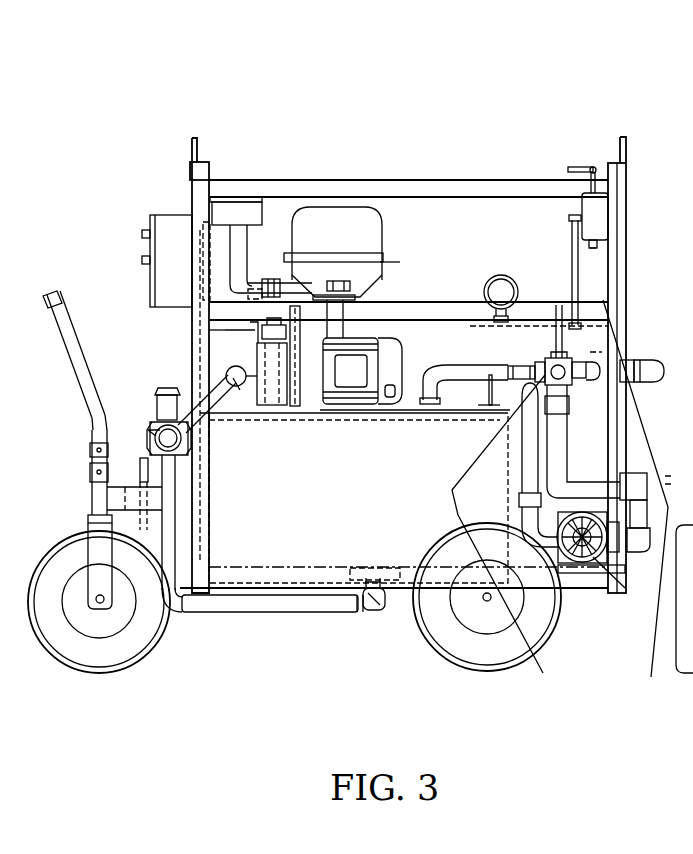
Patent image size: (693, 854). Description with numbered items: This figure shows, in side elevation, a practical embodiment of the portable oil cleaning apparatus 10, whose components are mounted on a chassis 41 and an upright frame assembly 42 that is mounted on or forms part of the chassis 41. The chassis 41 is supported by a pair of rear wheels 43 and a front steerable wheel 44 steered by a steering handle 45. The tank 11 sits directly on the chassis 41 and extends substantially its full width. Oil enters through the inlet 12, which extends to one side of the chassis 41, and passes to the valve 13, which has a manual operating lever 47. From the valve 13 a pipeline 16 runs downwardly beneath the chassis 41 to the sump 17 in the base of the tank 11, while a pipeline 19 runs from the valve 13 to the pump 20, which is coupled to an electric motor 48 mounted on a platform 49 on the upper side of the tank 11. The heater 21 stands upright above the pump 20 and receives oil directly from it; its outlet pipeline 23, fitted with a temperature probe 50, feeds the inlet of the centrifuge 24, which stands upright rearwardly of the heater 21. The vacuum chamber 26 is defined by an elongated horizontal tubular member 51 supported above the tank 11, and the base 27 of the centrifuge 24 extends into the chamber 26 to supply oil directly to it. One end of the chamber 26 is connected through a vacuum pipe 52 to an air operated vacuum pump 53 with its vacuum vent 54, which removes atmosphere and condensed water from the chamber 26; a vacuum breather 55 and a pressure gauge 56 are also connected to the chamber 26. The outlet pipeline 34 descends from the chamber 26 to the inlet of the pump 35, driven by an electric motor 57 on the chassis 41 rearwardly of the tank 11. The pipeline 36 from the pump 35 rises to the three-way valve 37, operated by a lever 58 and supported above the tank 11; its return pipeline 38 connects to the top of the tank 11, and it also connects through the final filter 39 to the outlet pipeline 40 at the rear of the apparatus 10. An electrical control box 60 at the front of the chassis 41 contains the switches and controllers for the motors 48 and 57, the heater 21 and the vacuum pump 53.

The oil cleaning apparatus 10 is at (557, 77).
The tank 11 is at (403, 513).
The inlet 12 is at (163, 385).
The valve 13 is at (158, 427).
The pipeline 16 is at (212, 612).
The sump 17 is at (368, 577).
The pipeline 19 is at (226, 380).
The pump 20 is at (233, 378).
The heater 21 is at (235, 200).
The outlet pipeline 23 is at (273, 283).
The centrifuge 24 is at (305, 208).
The vacuum chamber 26 is at (413, 325).
The base 27 is at (343, 322).
The outlet pipeline 34 is at (530, 453).
The pump 35 is at (592, 562).
The pipeline 36 is at (553, 428).
The three-way valve 37 is at (565, 358).
The return pipeline 38 is at (468, 372).
The final filter 39 is at (635, 504).
The outlet pipeline 40 is at (650, 363).
The chassis 41 is at (398, 590).
The upright frame assembly 42 is at (628, 240).
The rear wheels 43 is at (537, 630).
The front steerable wheel 44 is at (94, 658).
The steering handle 45 is at (77, 378).
The manual operating lever 47 is at (140, 465).
The electric motor 48 is at (377, 368).
The platform 49 is at (417, 413).
The temperature probe 50 is at (390, 265).
The tubular member 51 is at (540, 325).
The vacuum pipe 52 is at (577, 263).
The vacuum pump 53 is at (627, 243).
The vacuum vent 54 is at (594, 167).
The vacuum breather 55 is at (258, 298).
The pressure gauge 56 is at (501, 275).
The electric motor 57 is at (585, 560).
The lever 58 is at (513, 368).
The electrical control box 60 is at (165, 215).